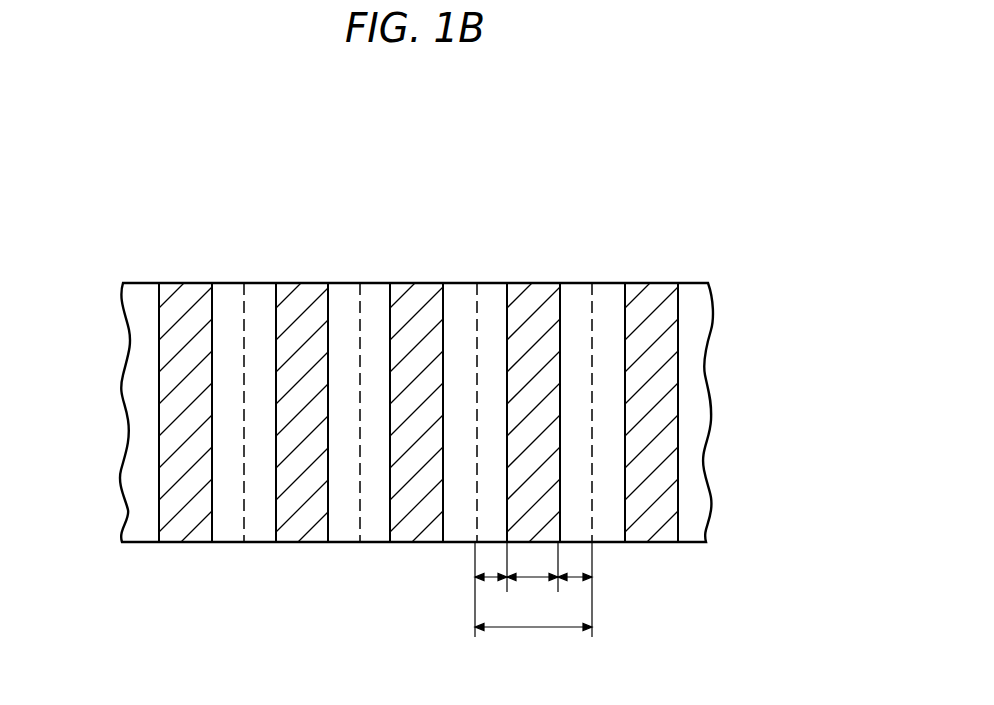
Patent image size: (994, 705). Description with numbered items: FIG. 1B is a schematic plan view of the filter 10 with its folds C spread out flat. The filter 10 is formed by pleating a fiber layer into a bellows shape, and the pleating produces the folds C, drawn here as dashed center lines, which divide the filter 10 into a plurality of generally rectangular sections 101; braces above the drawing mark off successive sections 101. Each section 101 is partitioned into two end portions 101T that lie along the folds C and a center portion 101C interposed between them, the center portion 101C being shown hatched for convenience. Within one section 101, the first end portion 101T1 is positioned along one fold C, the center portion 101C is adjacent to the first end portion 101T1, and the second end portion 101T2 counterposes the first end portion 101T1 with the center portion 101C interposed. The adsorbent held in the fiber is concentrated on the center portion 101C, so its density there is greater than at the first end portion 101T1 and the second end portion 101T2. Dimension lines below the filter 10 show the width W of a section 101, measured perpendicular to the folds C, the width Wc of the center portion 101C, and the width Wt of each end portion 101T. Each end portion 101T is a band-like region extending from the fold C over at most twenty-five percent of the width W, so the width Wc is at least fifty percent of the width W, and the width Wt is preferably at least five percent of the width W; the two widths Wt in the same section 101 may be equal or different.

The filter 10 is at (709, 138).
The section 101 is at (123, 281).
The center portion 101C is at (412, 283).
The end portion 101T is at (528, 387).
The first end portion 101T1 is at (373, 282).
The second end portion 101T2 is at (467, 283).
The fold C is at (244, 505).
The width of section W is at (533, 641).
The width of center portion Wc is at (532, 577).
The width of end portion Wt is at (491, 583).